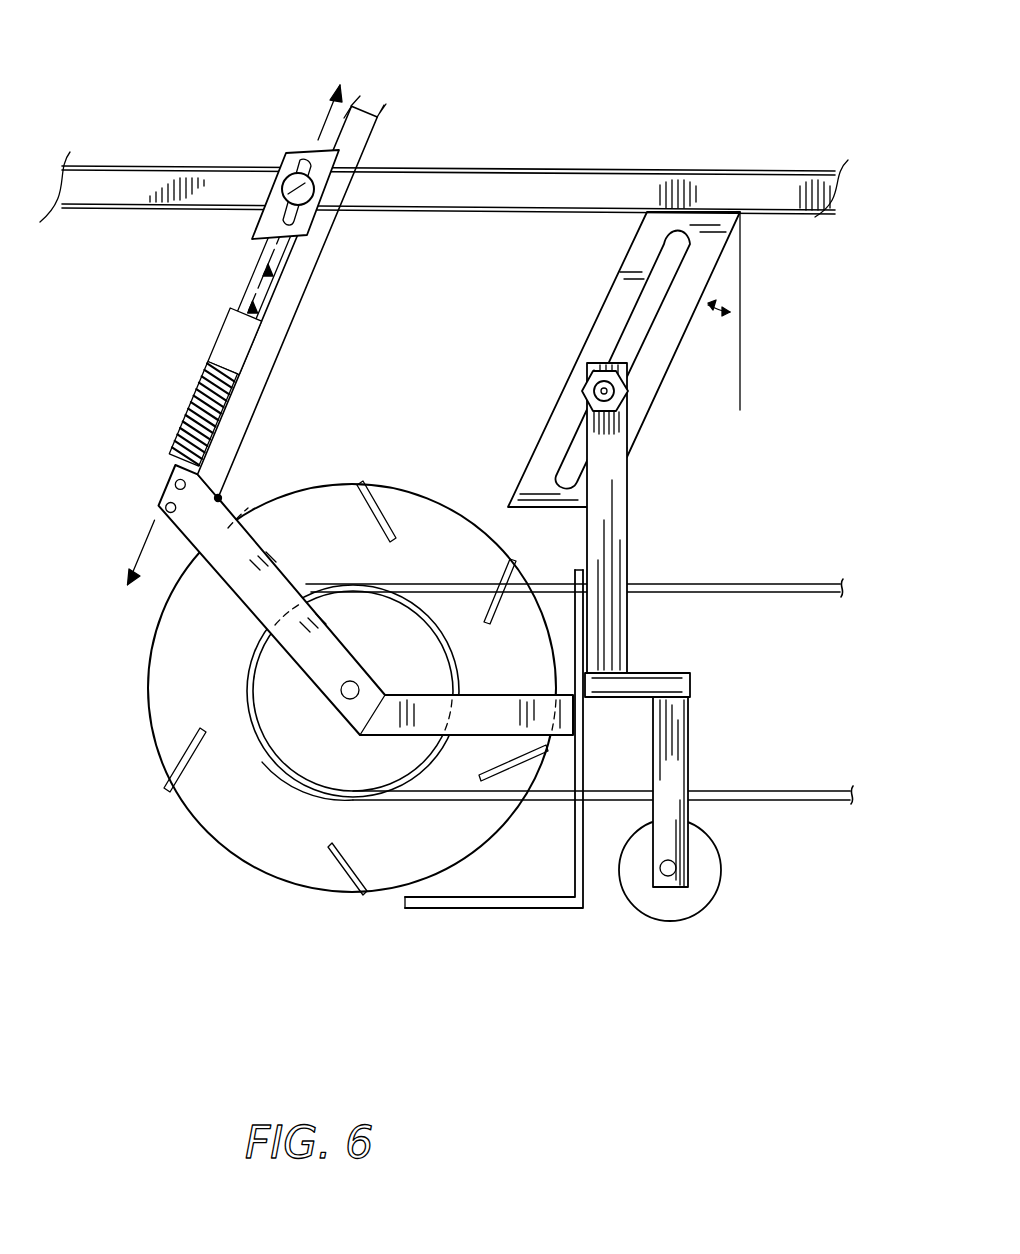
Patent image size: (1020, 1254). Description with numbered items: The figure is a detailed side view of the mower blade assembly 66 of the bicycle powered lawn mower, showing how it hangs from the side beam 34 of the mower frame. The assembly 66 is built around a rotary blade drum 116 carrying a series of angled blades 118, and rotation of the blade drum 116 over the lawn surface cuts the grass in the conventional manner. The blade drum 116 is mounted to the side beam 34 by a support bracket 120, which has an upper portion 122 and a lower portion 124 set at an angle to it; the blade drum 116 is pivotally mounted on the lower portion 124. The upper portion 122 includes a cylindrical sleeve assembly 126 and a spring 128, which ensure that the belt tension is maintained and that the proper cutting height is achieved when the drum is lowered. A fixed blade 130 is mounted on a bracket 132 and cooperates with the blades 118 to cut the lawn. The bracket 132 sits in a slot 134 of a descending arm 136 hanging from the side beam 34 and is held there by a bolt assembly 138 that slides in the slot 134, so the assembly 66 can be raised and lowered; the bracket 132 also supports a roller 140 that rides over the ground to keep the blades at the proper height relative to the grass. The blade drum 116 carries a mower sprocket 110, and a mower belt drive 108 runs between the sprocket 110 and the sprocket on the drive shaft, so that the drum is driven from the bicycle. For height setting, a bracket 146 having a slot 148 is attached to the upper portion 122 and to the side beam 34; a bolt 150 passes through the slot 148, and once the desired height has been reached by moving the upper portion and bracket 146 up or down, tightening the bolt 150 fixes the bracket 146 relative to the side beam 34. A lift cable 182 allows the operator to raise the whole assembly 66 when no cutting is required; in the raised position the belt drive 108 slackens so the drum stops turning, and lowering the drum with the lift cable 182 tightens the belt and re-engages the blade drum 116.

The mower blade assembly 66 is at (145, 124).
The side beam 34 is at (520, 190).
The mower belt drive 108 is at (800, 803).
The mower sprocket 110 is at (272, 765).
The rotary blade drum 116 is at (146, 680).
The angled blades 118 is at (183, 760).
The support bracket 120 is at (278, 335).
The upper portion 122 is at (262, 262).
The lower portion 124 is at (255, 532).
The cylindrical sleeve assembly 126 is at (220, 357).
The spring 128 is at (197, 420).
The fixed blade 130 is at (533, 907).
The bracket 132 is at (700, 644).
The slot 134 is at (640, 320).
The descending arm 136 is at (624, 359).
The bolt assembly 138 is at (590, 388).
The roller 140 is at (707, 890).
The bracket 146 is at (259, 139).
The slot 148 is at (303, 162).
The bolt 150 is at (287, 186).
The lift cable 182 is at (320, 262).